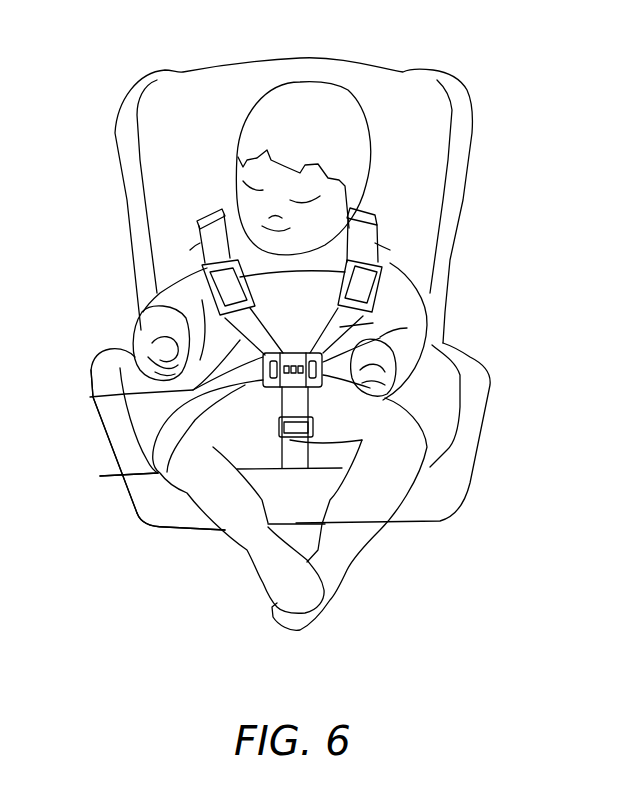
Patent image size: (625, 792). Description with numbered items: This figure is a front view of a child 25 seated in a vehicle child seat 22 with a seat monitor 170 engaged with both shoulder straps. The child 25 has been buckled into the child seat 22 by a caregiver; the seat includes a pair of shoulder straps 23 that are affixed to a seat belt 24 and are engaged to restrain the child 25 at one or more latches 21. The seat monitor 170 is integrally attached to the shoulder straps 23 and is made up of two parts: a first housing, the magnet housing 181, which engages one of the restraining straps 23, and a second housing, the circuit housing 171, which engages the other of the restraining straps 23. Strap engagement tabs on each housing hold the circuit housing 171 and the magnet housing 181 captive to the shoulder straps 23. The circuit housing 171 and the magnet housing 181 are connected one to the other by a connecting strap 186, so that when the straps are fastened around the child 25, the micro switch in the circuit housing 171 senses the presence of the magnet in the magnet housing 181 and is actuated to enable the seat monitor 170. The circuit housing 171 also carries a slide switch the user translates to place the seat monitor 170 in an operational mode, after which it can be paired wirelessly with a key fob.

The latch 21 is at (418, 316).
The child seat 22 is at (413, 88).
The shoulder straps 23 is at (200, 233).
The seat belt 24 is at (157, 473).
The child 25 is at (301, 103).
The seat monitor 170 is at (206, 266).
The circuit housing 171 is at (385, 270).
The magnet housing 181 is at (92, 398).
The connecting strap 186 is at (292, 385).